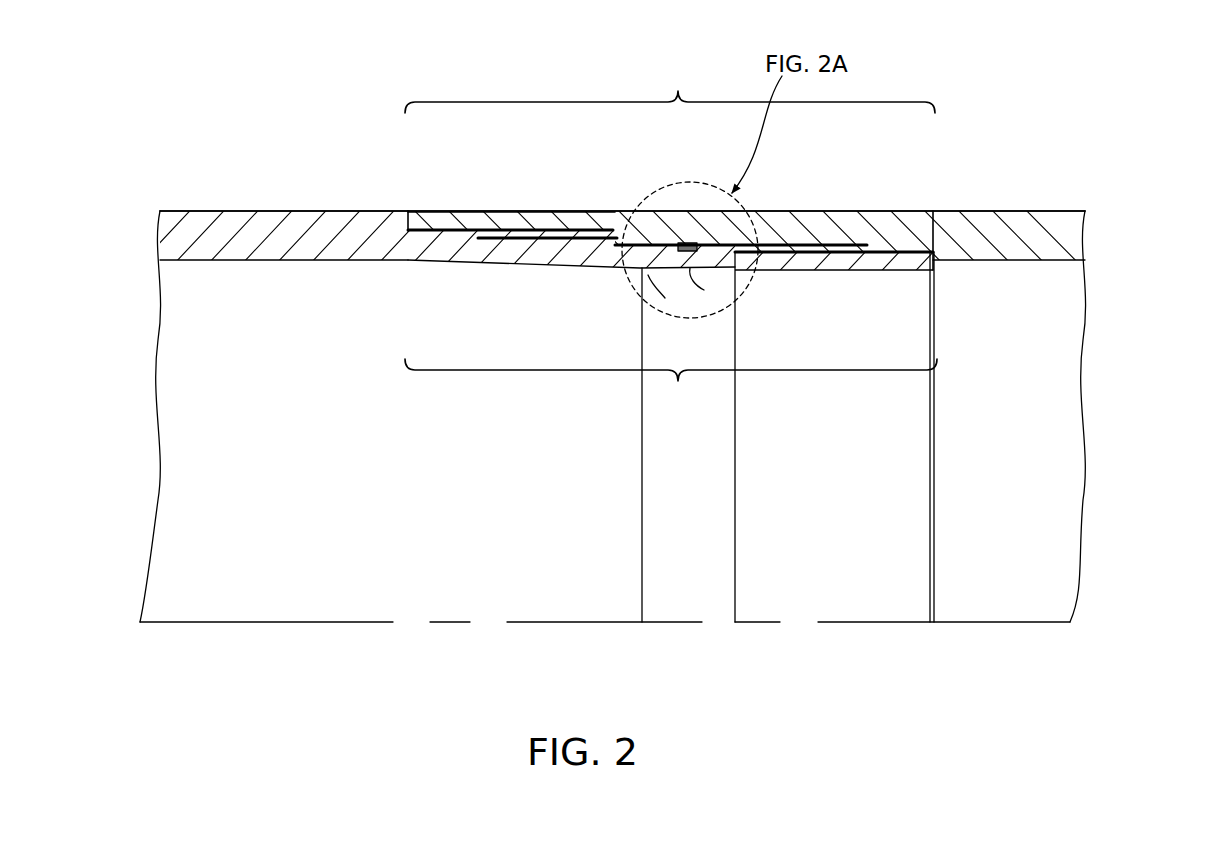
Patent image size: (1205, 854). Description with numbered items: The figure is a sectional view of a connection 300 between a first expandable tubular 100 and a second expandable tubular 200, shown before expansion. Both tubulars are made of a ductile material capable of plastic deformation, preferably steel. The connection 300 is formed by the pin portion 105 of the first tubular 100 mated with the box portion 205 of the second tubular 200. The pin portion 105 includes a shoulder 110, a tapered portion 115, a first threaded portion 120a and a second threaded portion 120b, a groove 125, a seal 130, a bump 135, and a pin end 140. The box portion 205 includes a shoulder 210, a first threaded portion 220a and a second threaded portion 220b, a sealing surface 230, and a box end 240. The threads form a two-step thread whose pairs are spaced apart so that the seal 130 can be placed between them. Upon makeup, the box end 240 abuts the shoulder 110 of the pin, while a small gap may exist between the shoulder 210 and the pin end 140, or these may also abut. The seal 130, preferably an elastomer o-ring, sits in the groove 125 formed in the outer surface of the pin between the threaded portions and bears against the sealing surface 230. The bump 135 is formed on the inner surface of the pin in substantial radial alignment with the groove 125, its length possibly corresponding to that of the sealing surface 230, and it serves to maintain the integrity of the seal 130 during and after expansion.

The first expandable tubular 100 is at (160, 245).
The pin portion 105 is at (671, 387).
The shoulder 110 is at (406, 228).
The tapered portion 115 is at (455, 268).
The first threaded portion 120a is at (545, 268).
The second threaded portion 120b is at (835, 270).
The groove 125 is at (656, 304).
The seal 130 is at (712, 295).
The bump 135 is at (697, 284).
The pin end 140 is at (952, 270).
The second expandable tubular 200 is at (1088, 238).
The box portion 205 is at (670, 86).
The shoulder 210 is at (936, 248).
The first threaded portion 220a is at (548, 228).
The second threaded portion 220b is at (822, 245).
The sealing surface 230 is at (700, 200).
The box end 240 is at (415, 226).
The connection 300 is at (440, 74).